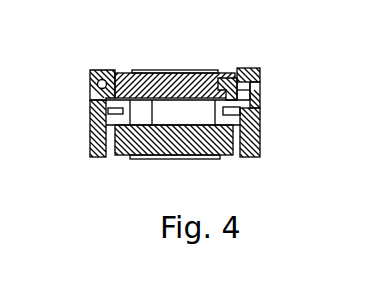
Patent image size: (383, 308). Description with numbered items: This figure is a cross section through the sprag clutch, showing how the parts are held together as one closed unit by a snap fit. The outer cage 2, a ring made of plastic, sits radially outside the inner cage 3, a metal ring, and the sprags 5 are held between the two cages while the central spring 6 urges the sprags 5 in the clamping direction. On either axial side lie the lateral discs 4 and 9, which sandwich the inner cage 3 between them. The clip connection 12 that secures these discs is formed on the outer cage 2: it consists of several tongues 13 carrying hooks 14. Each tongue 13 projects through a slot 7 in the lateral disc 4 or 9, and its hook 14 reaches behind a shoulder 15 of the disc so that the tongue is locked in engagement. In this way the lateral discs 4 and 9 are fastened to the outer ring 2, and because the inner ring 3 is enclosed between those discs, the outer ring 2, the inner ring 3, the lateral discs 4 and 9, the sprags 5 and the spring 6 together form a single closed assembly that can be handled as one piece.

The outer cage 2 is at (222, 78).
The inner cage 3 is at (223, 158).
The lateral disc 4 is at (103, 158).
The sprags 5 is at (172, 71).
The central spring 6 is at (151, 156).
The slots 7 is at (264, 86).
The lateral disc 9 is at (257, 158).
The clip connection 12 is at (272, 88).
The tongues 13 is at (92, 80).
The hooks 14 is at (252, 68).
The shoulders 15 is at (106, 80).